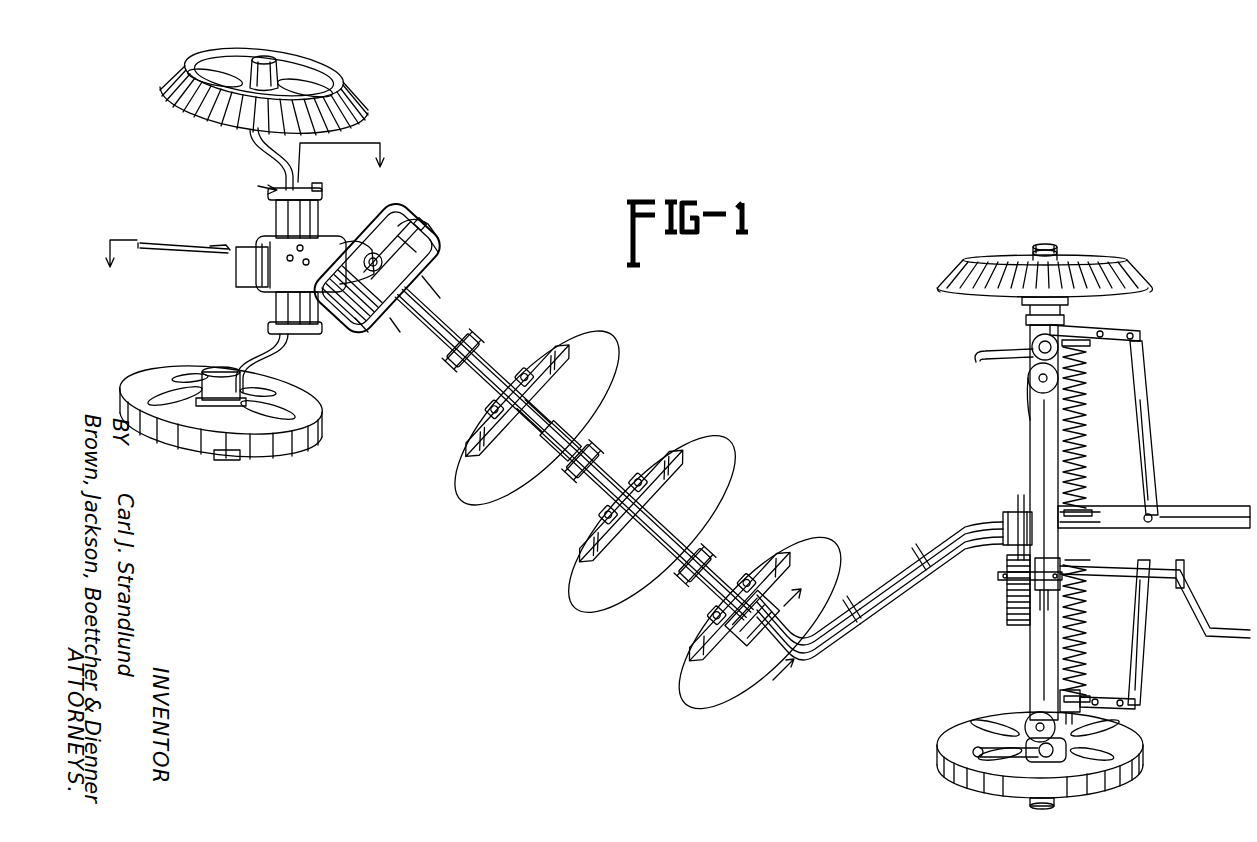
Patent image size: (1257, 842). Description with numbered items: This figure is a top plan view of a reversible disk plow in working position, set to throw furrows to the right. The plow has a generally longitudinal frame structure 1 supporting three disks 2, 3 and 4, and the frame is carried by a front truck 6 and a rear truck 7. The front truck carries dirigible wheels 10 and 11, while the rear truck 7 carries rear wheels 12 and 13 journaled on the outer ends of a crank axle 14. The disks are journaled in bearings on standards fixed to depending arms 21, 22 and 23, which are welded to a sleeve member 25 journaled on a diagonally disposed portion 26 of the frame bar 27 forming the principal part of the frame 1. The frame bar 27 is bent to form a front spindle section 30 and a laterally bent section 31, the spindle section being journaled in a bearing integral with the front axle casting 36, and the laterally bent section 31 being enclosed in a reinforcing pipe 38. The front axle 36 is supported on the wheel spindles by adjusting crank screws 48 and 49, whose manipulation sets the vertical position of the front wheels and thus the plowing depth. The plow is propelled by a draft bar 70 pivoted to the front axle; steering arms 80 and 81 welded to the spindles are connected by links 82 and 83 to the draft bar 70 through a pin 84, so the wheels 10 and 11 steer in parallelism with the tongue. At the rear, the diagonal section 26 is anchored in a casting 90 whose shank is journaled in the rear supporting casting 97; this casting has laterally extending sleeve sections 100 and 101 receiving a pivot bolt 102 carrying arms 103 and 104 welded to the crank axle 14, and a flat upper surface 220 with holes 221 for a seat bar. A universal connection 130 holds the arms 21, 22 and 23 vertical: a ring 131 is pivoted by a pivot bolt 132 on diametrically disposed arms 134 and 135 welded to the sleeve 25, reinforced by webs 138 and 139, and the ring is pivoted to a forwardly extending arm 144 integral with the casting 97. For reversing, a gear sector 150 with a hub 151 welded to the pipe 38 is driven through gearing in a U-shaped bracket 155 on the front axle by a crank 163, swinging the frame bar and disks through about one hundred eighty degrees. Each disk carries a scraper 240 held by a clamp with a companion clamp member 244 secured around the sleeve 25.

The frame structure 1 is at (880, 590).
The disk 2 is at (490, 500).
The disk 3 is at (586, 600).
The disk 4 is at (694, 706).
The front truck 6 is at (1022, 395).
The rear truck 7 is at (252, 215).
The dirigible wheel 10 is at (1130, 746).
The dirigible wheel 11 is at (1120, 278).
The rear wheel 12 is at (178, 86).
The rear wheel 13 is at (240, 432).
The crank axle 14 is at (258, 352).
The depending arm 21 is at (470, 346).
The depending arm 22 is at (588, 456).
The depending arm 23 is at (640, 566).
The sleeve member 25 is at (611, 481).
The diagonally disposed portion 26 is at (560, 426).
The frame bar 27 is at (549, 449).
The front spindle section 30 is at (996, 522).
The laterally bent section 31 is at (878, 620).
The front axle casting 36 is at (1036, 682).
The pipe 38 is at (929, 556).
The adjusting crank screw 48 is at (1025, 745).
The adjusting crank screw 49 is at (1034, 350).
The draft bar 70 is at (1178, 516).
The forwardly extending arm 80 is at (1092, 708).
The forwardly extending arm 81 is at (1096, 333).
The link 82 is at (1132, 650).
The link 83 is at (1141, 412).
The pin 84 is at (1151, 513).
The casting 90 is at (430, 242).
The rear supporting casting 97 is at (274, 213).
The sleeve section 100 is at (318, 216).
The sleeve section 101 is at (312, 300).
The pivot bolt 102 is at (322, 190).
The arm 103 is at (300, 200).
The arm 104 is at (290, 324).
The universal connection 130 is at (364, 344).
The ring 131 is at (400, 236).
The pivot bolt 132 is at (418, 226).
The arm 134 is at (430, 256).
The arm 135 is at (372, 326).
The web 138 is at (428, 281).
The web 139 is at (402, 324).
The forwardly extending arm 144 is at (356, 256).
The gear sector 150 is at (1003, 615).
The hub 151 is at (1003, 515).
The U-shaped bracket 155 is at (1040, 576).
The crank 163 is at (1116, 570).
The flat upper surface 220 is at (290, 262).
The hole 221 is at (282, 256).
The scraper 240 is at (552, 348).
The companion clamp member 244 is at (506, 380).